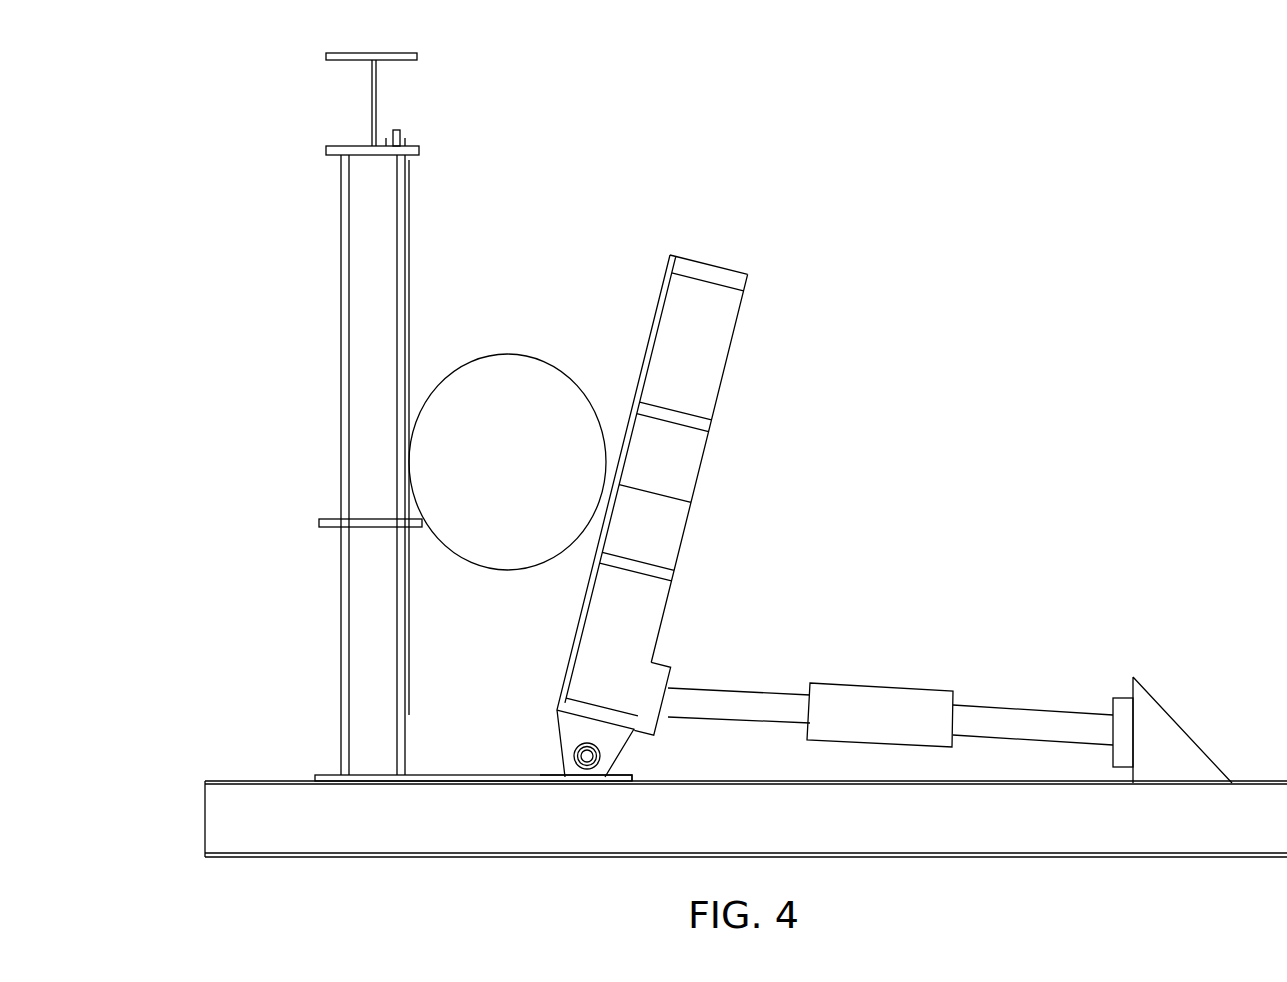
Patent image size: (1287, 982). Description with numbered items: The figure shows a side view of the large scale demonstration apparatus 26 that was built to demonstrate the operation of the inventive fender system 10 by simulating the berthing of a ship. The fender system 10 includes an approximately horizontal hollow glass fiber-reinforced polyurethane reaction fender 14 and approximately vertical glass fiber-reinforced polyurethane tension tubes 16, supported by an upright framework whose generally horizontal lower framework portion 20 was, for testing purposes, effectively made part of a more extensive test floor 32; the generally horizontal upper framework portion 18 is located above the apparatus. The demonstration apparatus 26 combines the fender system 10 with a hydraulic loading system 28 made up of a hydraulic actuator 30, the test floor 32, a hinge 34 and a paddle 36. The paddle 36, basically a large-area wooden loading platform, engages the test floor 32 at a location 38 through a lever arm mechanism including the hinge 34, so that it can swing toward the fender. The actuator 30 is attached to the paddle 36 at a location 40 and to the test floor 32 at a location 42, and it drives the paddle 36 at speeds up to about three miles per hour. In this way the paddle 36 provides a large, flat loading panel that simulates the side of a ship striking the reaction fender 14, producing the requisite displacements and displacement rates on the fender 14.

The fender system 10 is at (290, 219).
The reaction fender 14 is at (508, 345).
The tension tubes 16 is at (412, 240).
The upper framework portion 18 is at (346, 99).
The lower framework portion 20 is at (248, 777).
The demonstration apparatus 26 is at (920, 166).
The hydraulic loading system 28 is at (794, 484).
The hydraulic actuator 30 is at (838, 666).
The test floor 32 is at (480, 777).
The hinge 34 is at (620, 757).
The paddle 36 is at (737, 357).
The location 38 is at (592, 790).
The location 40 is at (676, 656).
The location 42 is at (1162, 792).